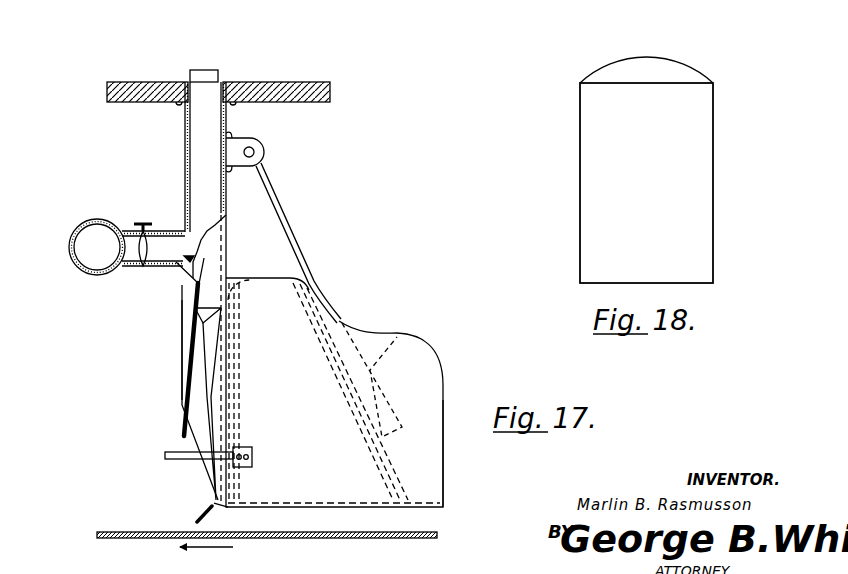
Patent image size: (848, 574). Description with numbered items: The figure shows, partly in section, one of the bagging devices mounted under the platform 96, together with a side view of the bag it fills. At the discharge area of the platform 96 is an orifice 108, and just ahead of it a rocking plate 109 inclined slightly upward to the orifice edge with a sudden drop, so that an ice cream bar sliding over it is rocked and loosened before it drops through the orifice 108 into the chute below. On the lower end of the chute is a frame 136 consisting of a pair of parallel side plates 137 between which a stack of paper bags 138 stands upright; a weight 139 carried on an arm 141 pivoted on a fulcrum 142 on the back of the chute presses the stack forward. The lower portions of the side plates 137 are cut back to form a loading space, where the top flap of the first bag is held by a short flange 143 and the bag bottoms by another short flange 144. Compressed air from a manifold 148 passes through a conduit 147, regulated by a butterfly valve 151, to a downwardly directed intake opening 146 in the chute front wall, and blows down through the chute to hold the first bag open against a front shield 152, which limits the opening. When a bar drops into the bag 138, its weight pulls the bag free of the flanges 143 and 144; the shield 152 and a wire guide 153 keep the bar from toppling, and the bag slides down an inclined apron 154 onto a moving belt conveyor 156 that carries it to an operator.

In FIG. 17, the platform 96 is at (300, 83).
In FIG. 17, the orifice 108 is at (222, 81).
In FIG. 17, the rocking plate 109 is at (206, 70).
In FIG. 17, the frame 136 is at (446, 370).
In FIG. 17, the side plate 137 is at (437, 472).
In FIG. 17, the paper bag 138 is at (198, 414).
In FIG. 18, the paper bag 138 is at (708, 186).
In FIG. 17, the weight 139 is at (398, 341).
In FIG. 17, the arm 141 is at (298, 243).
In FIG. 17, the fulcrum 142 is at (262, 151).
In FIG. 17, the short flange 143 is at (246, 283).
In FIG. 17, the short flange 144 is at (218, 506).
In FIG. 17, the intake opening 146 is at (178, 264).
In FIG. 17, the conduit 147 is at (167, 240).
In FIG. 17, the manifold 148 is at (80, 230).
In FIG. 17, the butterfly valve 151 is at (140, 258).
In FIG. 17, the front shield 152 is at (183, 351).
In FIG. 17, the wire guide 153 is at (165, 455).
In FIG. 17, the inclined apron 154 is at (197, 517).
In FIG. 17, the belt conveyor 156 is at (120, 541).